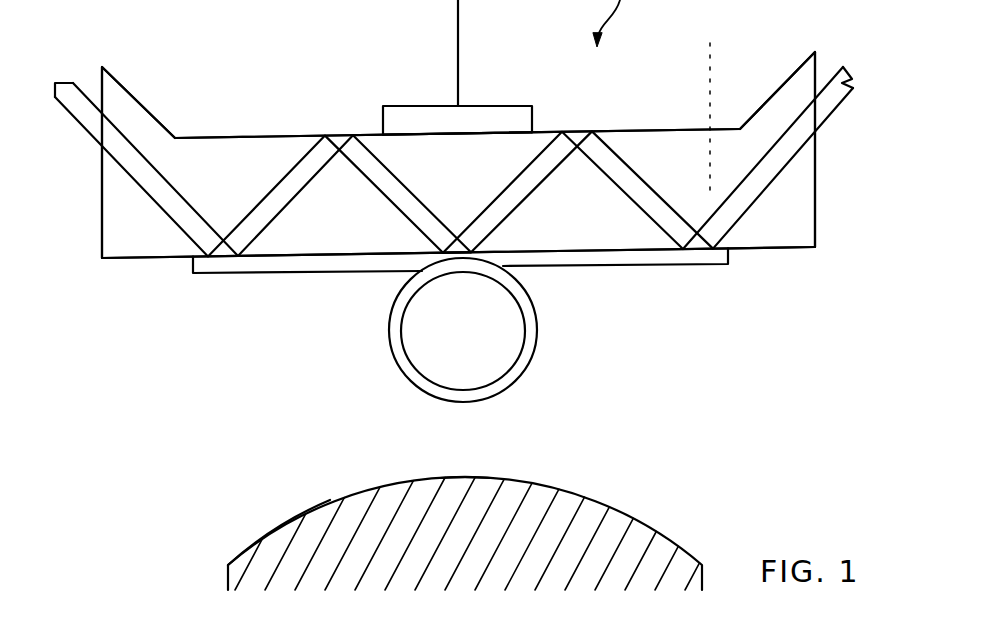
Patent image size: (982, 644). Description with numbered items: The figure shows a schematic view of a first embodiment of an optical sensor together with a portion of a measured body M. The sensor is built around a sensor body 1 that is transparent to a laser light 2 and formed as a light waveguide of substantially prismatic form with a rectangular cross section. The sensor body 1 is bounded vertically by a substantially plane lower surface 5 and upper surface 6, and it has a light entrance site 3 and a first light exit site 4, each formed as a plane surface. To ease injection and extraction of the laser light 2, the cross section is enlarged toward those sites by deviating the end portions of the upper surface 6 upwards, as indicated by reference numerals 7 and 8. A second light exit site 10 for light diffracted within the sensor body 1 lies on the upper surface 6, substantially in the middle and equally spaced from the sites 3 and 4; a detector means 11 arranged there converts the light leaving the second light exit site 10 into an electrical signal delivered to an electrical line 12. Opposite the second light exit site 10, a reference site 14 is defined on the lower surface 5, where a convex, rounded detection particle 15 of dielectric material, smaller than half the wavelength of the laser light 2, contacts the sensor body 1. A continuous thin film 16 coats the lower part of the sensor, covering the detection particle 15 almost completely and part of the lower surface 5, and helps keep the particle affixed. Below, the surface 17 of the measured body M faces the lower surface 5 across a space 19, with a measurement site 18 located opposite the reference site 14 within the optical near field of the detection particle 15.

The sensor body 1 is at (143, 270).
The laser light 2 is at (829, 108).
The light entrance site 3 is at (817, 200).
The first light exit site 4 is at (102, 201).
The lower surface 5 is at (770, 250).
The upper surface 6 is at (264, 137).
The upward-deviated end portion of upper surface 7 is at (776, 92).
The upward-deviated end portion of upper surface 8 is at (150, 112).
The second light exit site 10 is at (461, 134).
The detector means 11 is at (415, 106).
The electrical line 12 is at (460, 27).
The reference site 14 is at (460, 257).
The detection particle 15 is at (524, 322).
The thin film 16 is at (277, 275).
The surface 17 is at (641, 518).
The measurement site 18 is at (473, 477).
The space 19 is at (692, 413).
The measured body M is at (282, 505).